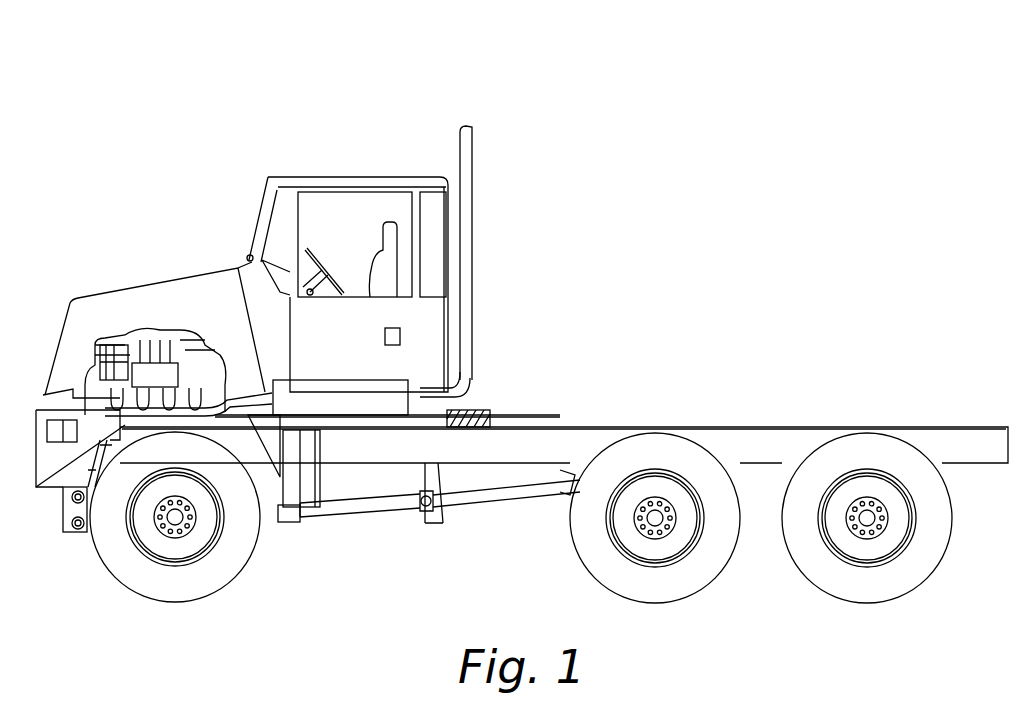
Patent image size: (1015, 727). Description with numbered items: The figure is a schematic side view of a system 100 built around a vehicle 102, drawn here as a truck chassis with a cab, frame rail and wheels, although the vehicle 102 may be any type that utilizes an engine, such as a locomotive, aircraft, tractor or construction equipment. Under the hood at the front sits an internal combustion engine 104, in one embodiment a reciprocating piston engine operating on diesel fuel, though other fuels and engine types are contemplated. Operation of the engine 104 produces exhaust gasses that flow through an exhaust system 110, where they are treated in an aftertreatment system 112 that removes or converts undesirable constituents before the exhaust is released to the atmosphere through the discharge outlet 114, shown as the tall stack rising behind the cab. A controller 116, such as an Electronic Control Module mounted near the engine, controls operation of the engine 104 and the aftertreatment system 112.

The system 100 is at (236, 132).
The vehicle 102 is at (615, 202).
The internal combustion engine 104 is at (199, 358).
The exhaust system 110 is at (291, 380).
The aftertreatment system 112 is at (345, 372).
The discharge outlet 114 is at (472, 131).
The controller 116 is at (113, 373).